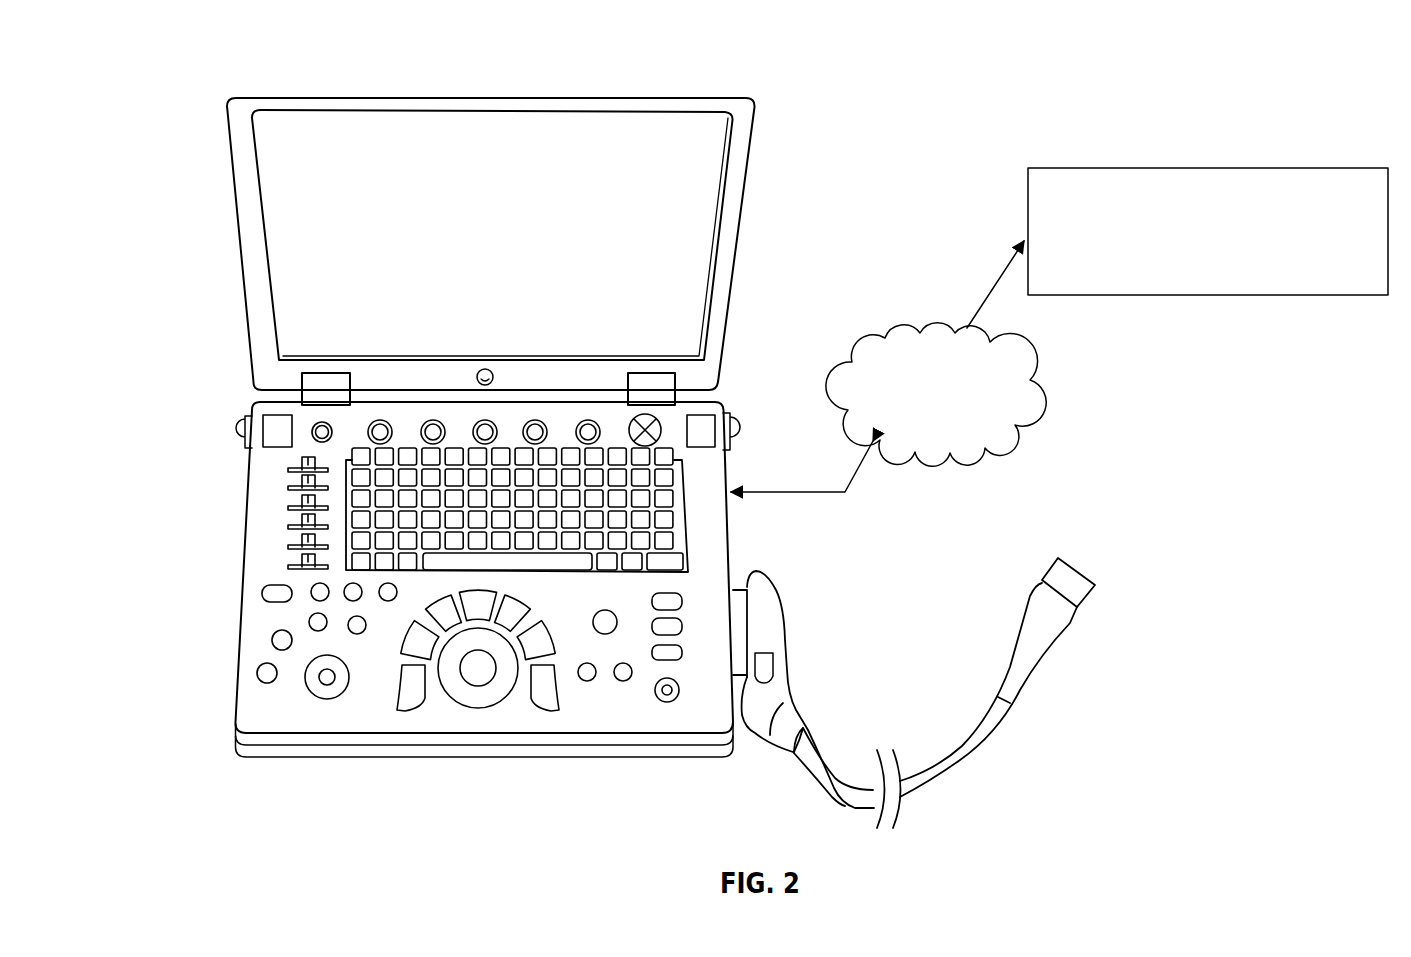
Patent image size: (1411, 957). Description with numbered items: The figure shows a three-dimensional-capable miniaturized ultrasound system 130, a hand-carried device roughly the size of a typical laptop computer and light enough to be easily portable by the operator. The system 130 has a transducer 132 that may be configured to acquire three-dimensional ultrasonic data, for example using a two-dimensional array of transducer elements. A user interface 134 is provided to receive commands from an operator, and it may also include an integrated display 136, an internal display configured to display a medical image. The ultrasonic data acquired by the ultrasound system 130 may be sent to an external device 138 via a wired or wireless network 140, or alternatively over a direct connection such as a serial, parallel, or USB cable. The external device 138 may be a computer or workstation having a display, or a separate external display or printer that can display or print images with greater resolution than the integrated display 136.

The miniaturized ultrasound system 130 is at (210, 58).
The transducer 132 is at (914, 812).
The user interface 134 is at (240, 445).
The integrated display 136 is at (213, 107).
The external device 138 is at (1095, 167).
The network 140 is at (905, 328).